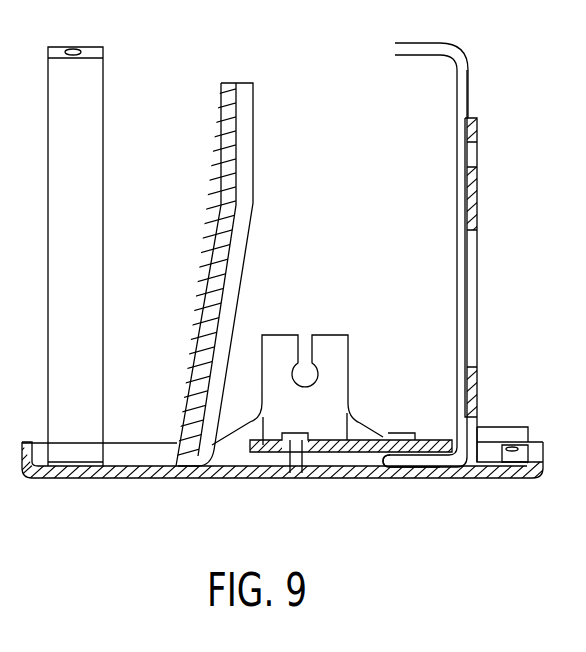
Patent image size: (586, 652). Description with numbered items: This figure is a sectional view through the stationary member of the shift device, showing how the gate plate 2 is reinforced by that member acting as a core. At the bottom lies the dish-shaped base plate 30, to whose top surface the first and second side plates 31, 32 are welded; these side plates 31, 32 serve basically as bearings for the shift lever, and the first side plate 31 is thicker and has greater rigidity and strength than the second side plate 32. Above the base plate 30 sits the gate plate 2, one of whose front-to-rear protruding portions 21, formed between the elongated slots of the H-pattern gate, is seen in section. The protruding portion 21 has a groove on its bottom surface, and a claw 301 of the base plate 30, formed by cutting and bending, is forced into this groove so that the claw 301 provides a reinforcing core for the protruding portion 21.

The gate plate 2 is at (432, 434).
The protruding portion 21 is at (383, 438).
The base plate 30 is at (532, 478).
The claw 301 is at (384, 470).
The first side plate 31 is at (213, 250).
The second side plate 32 is at (478, 192).